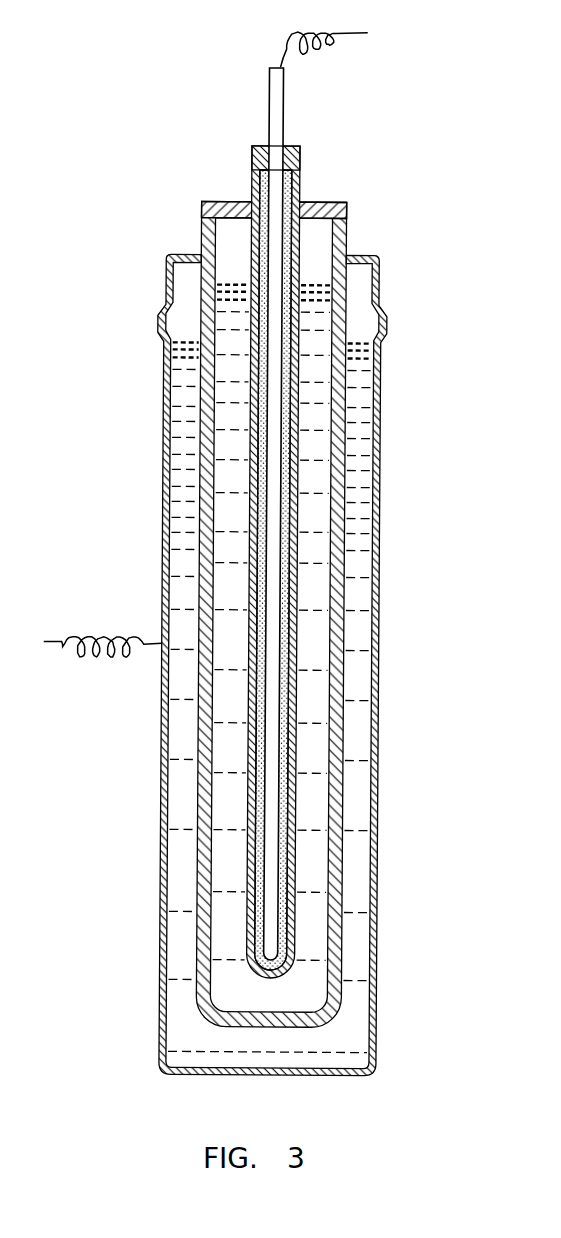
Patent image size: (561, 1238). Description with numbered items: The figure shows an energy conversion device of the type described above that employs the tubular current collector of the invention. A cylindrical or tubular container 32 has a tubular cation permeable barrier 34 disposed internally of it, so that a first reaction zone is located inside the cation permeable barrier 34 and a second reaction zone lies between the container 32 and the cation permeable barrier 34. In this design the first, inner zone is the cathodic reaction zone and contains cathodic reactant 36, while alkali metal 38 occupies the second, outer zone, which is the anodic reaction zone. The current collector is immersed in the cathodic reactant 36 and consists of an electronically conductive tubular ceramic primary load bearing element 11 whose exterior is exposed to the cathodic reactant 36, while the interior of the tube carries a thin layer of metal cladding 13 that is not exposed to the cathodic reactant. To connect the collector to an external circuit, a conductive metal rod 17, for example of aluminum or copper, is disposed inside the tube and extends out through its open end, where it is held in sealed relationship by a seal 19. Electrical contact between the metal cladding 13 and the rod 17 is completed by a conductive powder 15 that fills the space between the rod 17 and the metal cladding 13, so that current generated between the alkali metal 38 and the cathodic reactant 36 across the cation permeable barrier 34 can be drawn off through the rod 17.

The electronically conductive tubular ceramic primary load bearing element 11 is at (298, 651).
The metal cladding 13 is at (292, 702).
The conductive powder 15 is at (290, 766).
The conductive metal rod 17 is at (272, 815).
The seal 19 is at (285, 145).
The container 32 is at (380, 402).
The cation permeable barrier 34 is at (345, 530).
The cathodic reactant 36 is at (313, 590).
The alkali metal 38 is at (358, 468).